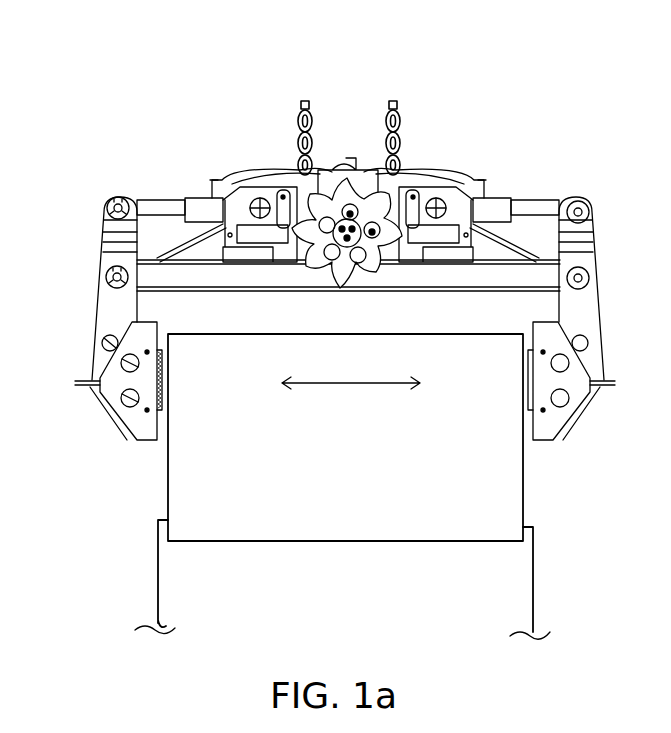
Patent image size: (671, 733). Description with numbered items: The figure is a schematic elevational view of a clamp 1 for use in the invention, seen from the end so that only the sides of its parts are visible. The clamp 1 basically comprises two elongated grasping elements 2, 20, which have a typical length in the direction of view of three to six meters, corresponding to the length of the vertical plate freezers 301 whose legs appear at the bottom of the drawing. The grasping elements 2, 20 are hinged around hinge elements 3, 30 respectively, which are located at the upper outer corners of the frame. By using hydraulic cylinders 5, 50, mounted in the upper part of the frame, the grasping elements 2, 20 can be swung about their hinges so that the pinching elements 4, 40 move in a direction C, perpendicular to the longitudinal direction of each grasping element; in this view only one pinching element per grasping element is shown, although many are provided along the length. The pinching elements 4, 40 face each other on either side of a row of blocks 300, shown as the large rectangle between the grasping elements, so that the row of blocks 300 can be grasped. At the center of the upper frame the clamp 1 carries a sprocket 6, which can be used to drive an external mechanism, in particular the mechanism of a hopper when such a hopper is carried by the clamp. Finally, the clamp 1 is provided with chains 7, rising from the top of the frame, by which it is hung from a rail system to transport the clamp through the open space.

The clamp 1 is at (541, 97).
The elongated grasping element 2 is at (598, 362).
The hinge element 3 is at (597, 272).
The pinching element 4 is at (526, 400).
The hydraulic cylinder 5 is at (524, 202).
The sprocket 6 is at (336, 284).
The chains 7 is at (298, 122).
The elongated grasping element 20 is at (90, 356).
The hinge element 30 is at (100, 266).
The pinching element 40 is at (162, 388).
The hydraulic cylinder 50 is at (164, 200).
The blocks 300 is at (525, 494).
The plate freezers 301 is at (534, 568).